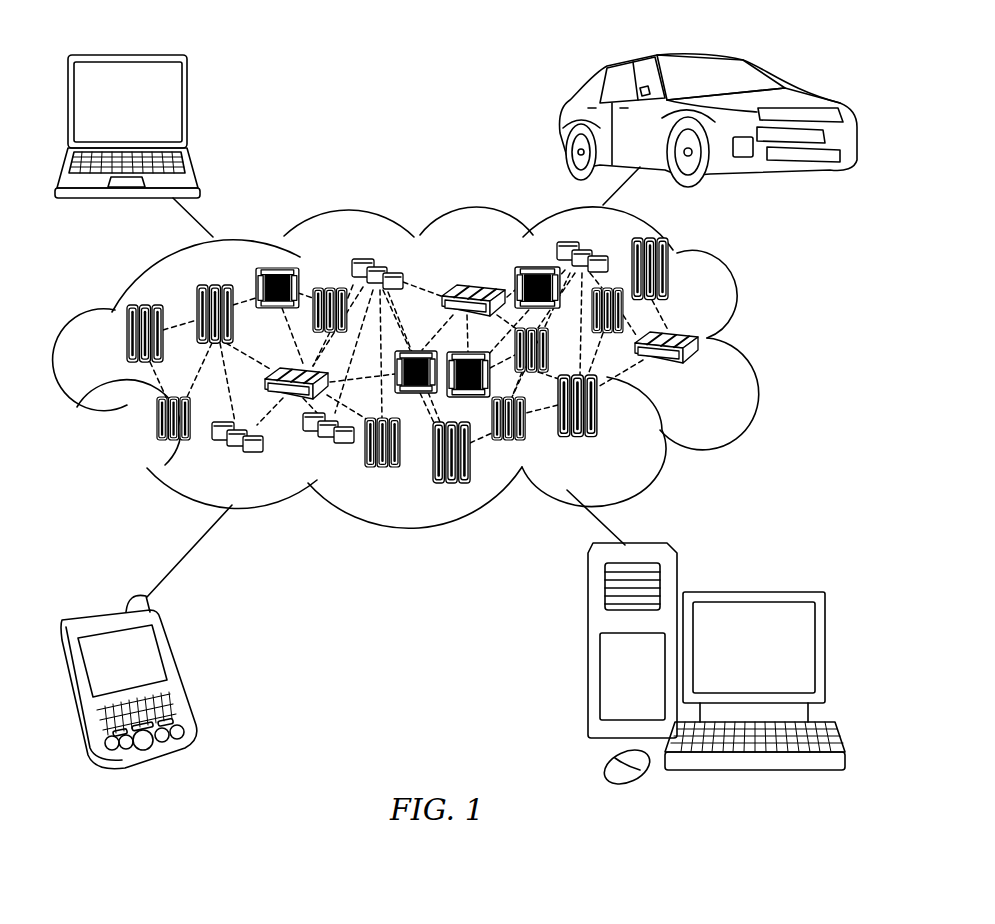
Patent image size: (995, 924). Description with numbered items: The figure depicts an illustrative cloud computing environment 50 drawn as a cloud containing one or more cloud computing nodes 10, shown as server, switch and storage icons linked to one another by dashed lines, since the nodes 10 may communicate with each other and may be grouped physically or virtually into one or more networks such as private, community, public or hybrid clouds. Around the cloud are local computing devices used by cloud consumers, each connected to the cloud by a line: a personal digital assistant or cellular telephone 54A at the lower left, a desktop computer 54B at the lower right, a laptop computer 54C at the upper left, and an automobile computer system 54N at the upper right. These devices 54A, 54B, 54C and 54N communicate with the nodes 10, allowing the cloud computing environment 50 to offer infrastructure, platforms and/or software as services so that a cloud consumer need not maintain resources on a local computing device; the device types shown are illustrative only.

The cloud computing nodes 10 is at (706, 373).
The cloud computing environment 50 is at (756, 348).
The personal digital assistant (PDA) or cellular telephone 54A is at (180, 671).
The desktop computer 54B is at (752, 592).
The laptop computer 54C is at (188, 108).
The automobile computer system 54N is at (563, 125).